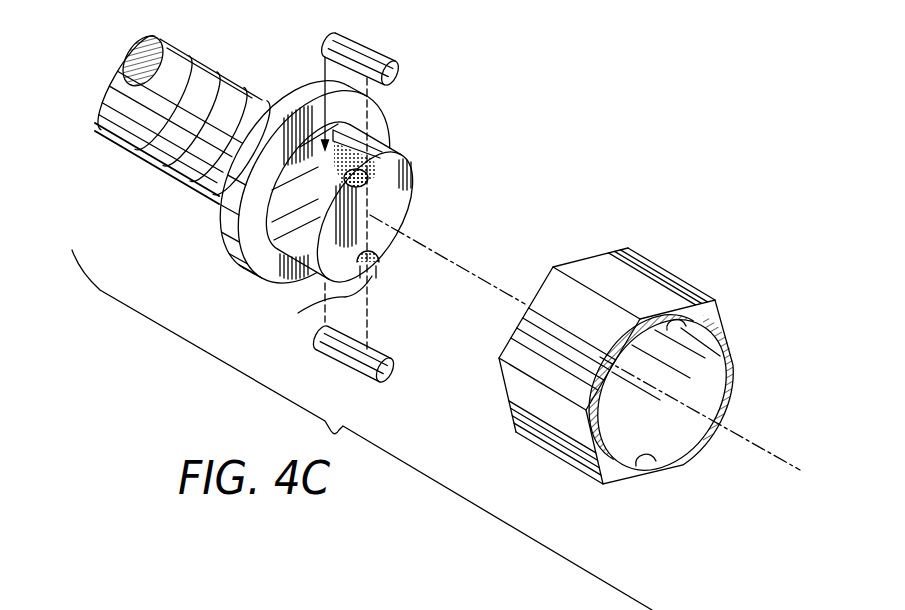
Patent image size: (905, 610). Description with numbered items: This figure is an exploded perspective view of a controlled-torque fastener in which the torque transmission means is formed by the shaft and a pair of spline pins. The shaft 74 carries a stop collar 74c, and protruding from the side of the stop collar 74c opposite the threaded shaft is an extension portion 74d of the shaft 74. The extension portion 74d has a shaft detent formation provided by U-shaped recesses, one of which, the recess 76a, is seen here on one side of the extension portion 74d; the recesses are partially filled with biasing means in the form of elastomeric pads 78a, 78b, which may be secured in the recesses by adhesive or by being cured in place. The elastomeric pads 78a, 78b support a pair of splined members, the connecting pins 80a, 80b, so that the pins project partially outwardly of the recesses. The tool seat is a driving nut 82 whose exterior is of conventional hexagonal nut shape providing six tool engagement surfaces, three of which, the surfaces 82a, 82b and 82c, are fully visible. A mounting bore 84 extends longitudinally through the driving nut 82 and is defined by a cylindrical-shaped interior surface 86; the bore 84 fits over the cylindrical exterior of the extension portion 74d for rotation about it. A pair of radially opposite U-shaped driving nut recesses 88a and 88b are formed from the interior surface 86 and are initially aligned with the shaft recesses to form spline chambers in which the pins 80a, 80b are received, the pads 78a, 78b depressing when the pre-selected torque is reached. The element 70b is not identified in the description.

The shaft 74 is at (138, 167).
The stop collar 74c is at (298, 97).
The extension portion 74d is at (394, 216).
The U-shaped recess 76a is at (368, 148).
The elastomeric pad 78a is at (395, 193).
The elastomeric pad 78b is at (388, 250).
The connecting pin 80a is at (362, 52).
The connecting pin 80b is at (376, 358).
The coupling member 70b is at (320, 304).
The driving nut 82 is at (676, 271).
The tool engagement surface 82a is at (608, 272).
The tool engagement surface 82b is at (520, 343).
The tool engagement surface 82c is at (547, 415).
The mounting bore 84 is at (662, 395).
The interior surface 86 is at (733, 362).
The driving nut recess 88a is at (716, 303).
The driving nut recess 88b is at (656, 464).